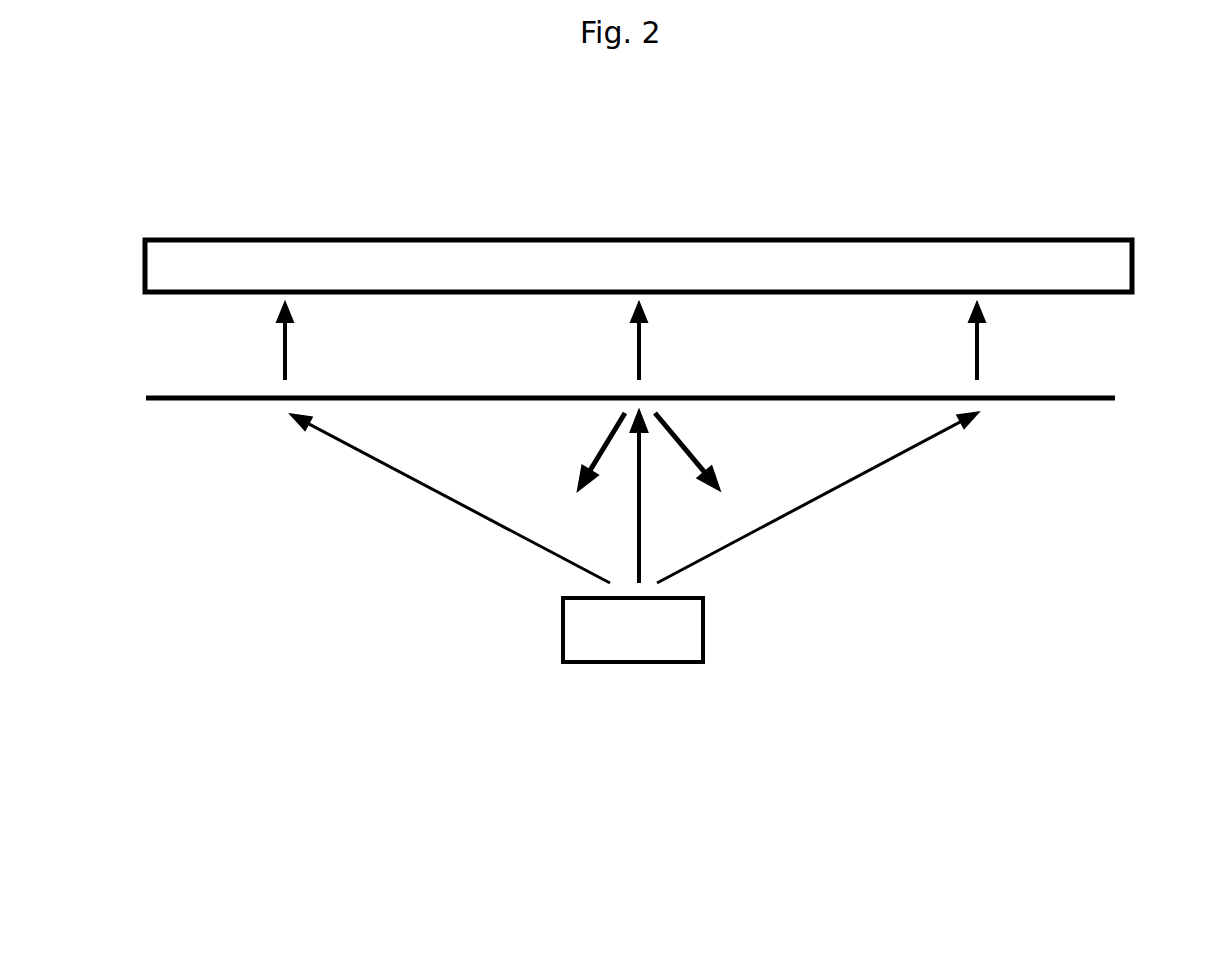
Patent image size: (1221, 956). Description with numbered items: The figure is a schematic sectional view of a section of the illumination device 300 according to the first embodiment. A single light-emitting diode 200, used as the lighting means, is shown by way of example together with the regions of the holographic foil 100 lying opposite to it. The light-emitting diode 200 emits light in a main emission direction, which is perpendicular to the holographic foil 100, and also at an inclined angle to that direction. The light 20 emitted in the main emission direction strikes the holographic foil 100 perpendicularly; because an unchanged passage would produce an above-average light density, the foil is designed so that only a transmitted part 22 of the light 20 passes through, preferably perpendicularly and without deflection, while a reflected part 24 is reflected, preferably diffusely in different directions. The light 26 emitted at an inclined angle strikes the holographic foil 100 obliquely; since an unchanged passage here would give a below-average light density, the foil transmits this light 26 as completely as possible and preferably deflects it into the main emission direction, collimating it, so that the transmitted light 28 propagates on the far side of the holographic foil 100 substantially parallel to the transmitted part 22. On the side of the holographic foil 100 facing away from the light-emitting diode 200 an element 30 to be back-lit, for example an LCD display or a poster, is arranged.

The light emitted in the main emission direction 20 is at (653, 513).
The transmitted part of the light 22 is at (653, 340).
The reflected part of the light 24 is at (585, 443).
The light emitted at an inclined angle 26 is at (473, 525).
The transmitted light 28 is at (272, 340).
The element to be back-lit 30 is at (362, 263).
The holographic foil 100 is at (1067, 410).
The light-emitting diode 200 is at (725, 639).
The illumination device 300 is at (255, 692).